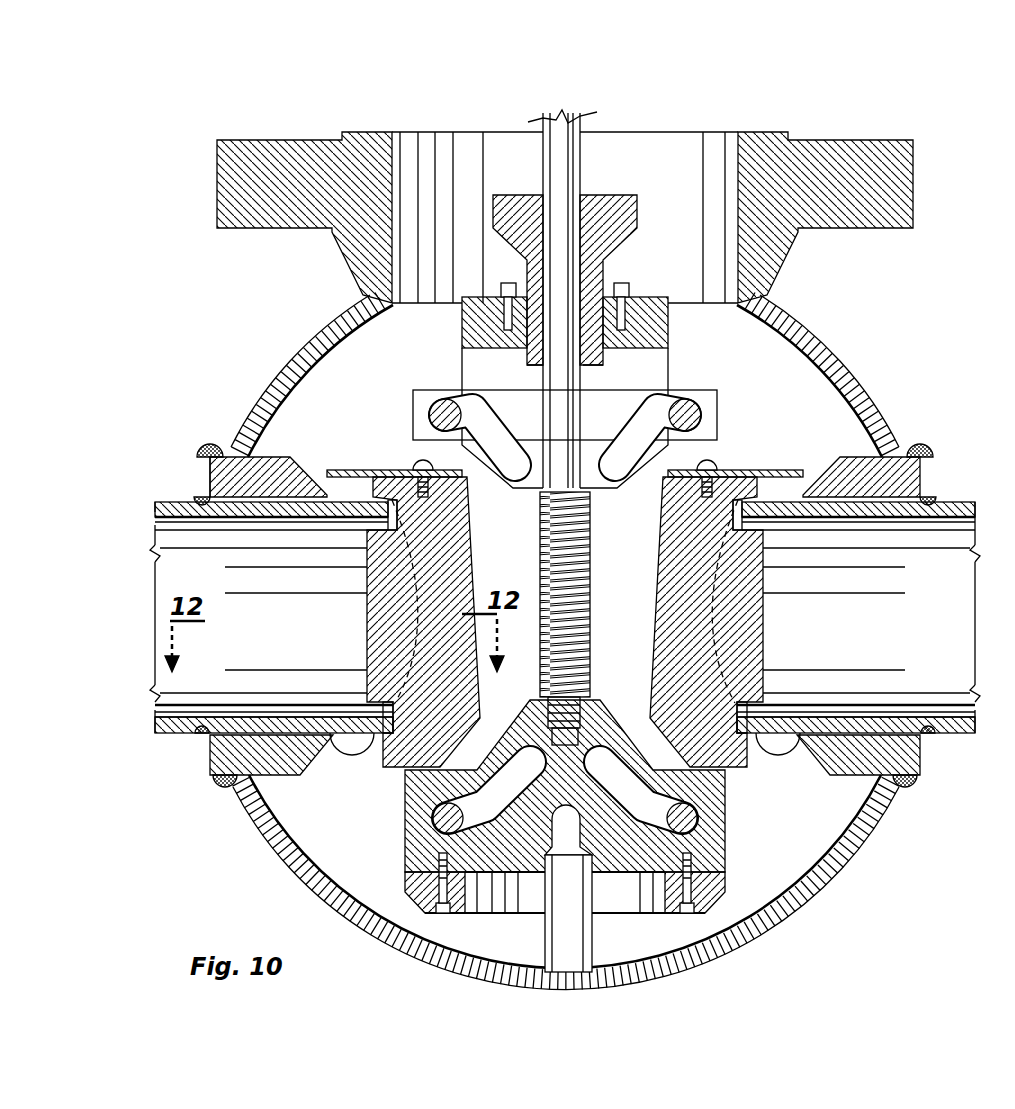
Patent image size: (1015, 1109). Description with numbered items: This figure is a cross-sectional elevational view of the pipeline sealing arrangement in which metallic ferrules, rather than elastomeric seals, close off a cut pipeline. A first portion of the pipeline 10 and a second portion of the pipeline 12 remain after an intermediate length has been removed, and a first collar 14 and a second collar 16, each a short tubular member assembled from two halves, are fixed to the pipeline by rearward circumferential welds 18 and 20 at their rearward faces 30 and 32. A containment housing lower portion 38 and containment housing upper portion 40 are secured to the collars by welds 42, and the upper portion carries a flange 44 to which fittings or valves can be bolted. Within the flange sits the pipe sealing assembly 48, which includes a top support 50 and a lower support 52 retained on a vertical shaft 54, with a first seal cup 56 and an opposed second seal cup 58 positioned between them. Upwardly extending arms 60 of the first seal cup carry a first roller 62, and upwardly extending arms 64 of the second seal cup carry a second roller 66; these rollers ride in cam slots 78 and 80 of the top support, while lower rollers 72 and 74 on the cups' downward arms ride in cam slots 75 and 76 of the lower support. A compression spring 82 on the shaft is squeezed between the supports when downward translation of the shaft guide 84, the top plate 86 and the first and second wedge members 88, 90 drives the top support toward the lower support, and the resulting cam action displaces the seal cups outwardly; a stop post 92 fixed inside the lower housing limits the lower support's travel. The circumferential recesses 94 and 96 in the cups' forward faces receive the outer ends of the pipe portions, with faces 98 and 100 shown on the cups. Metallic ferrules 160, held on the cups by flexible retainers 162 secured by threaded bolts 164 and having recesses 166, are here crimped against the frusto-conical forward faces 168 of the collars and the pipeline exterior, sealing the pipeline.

The first portion of the pipeline 10 is at (173, 733).
The second portion of the pipeline 12 is at (950, 500).
The first circumferential collar 14 is at (290, 486).
The second collar 16 is at (838, 754).
The rearward circumferential weld 18 is at (200, 496).
The rearward circumferential weld 20 is at (932, 735).
The rearward face of first collar 30 is at (206, 475).
The rearward face of second collar 32 is at (925, 478).
The containment housing lower portion 38 is at (800, 915).
The containment housing upper portion 40 is at (825, 358).
The welds 42 is at (211, 447).
The flange 44 is at (247, 205).
The pipe sealing assembly 48 is at (730, 405).
The top support 50 is at (612, 395).
The lower support 52 is at (415, 852).
The vertical shaft 54 is at (572, 160).
The first seal cup 56 is at (410, 610).
The second seal cup 58 is at (720, 610).
The upwardly extending arms 60 is at (455, 452).
The first roller 62 is at (445, 408).
The upwardly extending arms 64 is at (692, 455).
The second roller 66 is at (716, 393).
The lower roller 72 is at (446, 818).
The lower roller 74 is at (686, 818).
The cam slot 75 is at (490, 876).
The cam slot 76 is at (643, 822).
The cam slot 78 is at (503, 482).
The cam slot 80 is at (607, 482).
The compression spring 82 is at (587, 605).
The shaft guide 84 is at (612, 205).
The top plate 86 is at (620, 298).
The first wedge member 88 is at (494, 563).
The second wedge member 90 is at (606, 575).
The stop post 92 is at (572, 926).
The circumferential recess 94 is at (382, 525).
The circumferential recess 96 is at (748, 525).
The first wedge face 98 is at (419, 601).
The second wedge face 100 is at (705, 601).
The metallic ferrule 160 is at (352, 752).
The retainers 162 is at (400, 470).
The threaded bolt 164 is at (714, 455).
The recess 166 is at (416, 466).
The frusto-conical forward face 168 is at (318, 766).